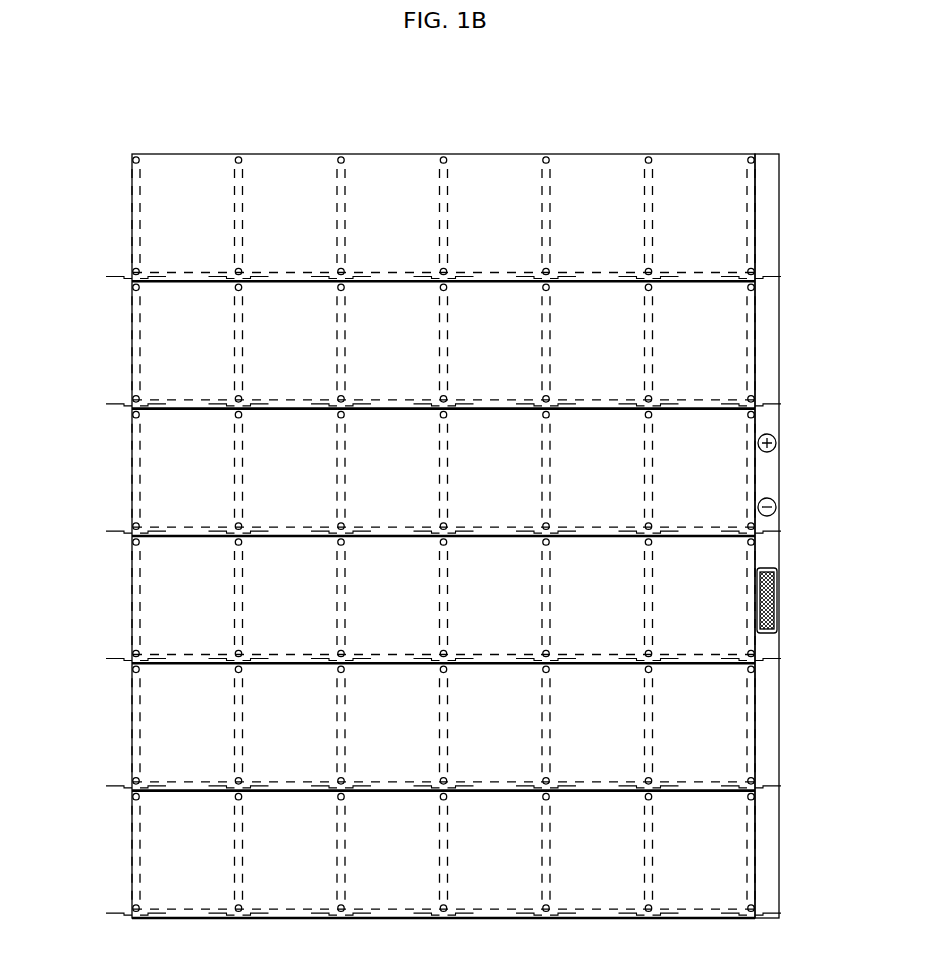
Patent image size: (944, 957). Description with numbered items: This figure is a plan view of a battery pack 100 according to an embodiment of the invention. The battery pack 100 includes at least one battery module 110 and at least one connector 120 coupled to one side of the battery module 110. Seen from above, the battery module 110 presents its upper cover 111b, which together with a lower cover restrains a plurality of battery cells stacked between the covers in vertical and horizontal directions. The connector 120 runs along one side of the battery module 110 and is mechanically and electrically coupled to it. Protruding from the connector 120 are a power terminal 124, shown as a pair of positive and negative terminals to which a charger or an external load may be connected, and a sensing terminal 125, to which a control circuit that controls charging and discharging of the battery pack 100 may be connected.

The battery pack 100 is at (84, 86).
The battery module 110 is at (130, 212).
The upper cover 111b is at (153, 244).
The connector 120 is at (783, 201).
The power terminal 124 is at (776, 441).
The sensing terminal 125 is at (778, 583).